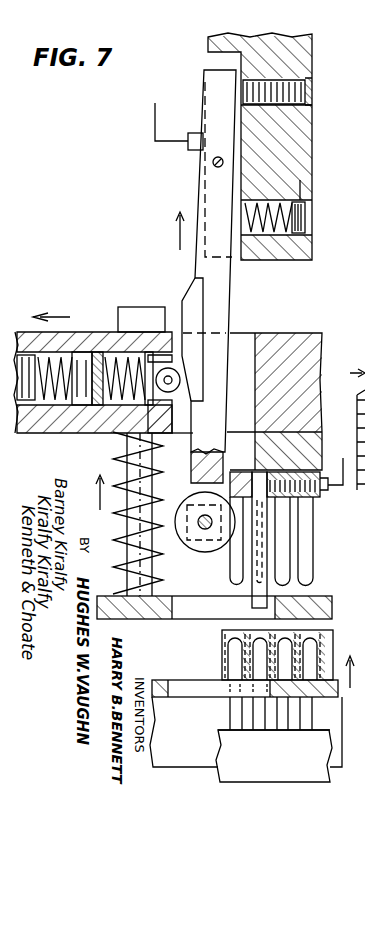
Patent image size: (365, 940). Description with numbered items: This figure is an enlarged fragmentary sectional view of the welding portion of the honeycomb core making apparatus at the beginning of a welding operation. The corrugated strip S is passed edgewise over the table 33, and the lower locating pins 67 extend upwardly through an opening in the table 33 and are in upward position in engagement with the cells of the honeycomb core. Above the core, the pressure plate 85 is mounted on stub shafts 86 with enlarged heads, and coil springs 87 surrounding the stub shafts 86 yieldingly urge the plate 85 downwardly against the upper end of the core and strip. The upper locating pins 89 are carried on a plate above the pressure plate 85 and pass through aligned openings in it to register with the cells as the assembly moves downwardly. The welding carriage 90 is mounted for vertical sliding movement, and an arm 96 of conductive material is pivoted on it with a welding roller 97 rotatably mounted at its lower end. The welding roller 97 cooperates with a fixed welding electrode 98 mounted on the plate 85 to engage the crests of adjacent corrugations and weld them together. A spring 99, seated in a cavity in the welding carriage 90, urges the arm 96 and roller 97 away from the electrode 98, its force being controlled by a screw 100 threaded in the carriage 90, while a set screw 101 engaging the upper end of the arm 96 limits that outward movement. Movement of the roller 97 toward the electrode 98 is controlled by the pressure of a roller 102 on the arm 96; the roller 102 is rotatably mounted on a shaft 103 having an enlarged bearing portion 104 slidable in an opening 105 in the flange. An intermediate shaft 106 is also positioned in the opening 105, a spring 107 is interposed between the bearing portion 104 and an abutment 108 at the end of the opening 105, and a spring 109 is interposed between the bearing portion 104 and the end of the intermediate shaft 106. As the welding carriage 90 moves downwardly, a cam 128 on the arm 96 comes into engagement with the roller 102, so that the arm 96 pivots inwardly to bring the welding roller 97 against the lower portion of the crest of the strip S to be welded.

The table 33 is at (246, 731).
The lower locating pins 67 is at (232, 716).
The strip S is at (220, 658).
The pressure plate 85 is at (128, 616).
The stub shafts 86 is at (150, 578).
The coil springs 87 is at (120, 578).
The upper locating pins 89 is at (307, 557).
The welding carriage 90 is at (297, 146).
The arm 96 is at (222, 299).
The welding roller 97 is at (203, 553).
The welding electrode 98 is at (262, 594).
The spring 99 is at (306, 189).
The screw 100 is at (300, 218).
The set screw 101 is at (283, 95).
The roller 102 is at (165, 366).
The shaft 103 is at (100, 332).
The enlarged bearing portion 104 is at (90, 332).
The opening 105 is at (35, 433).
The intermediate shaft 106 is at (20, 330).
The spring 107 is at (106, 405).
The abutment 108 is at (125, 433).
The spring 109 is at (68, 405).
The cam 128 is at (197, 322).